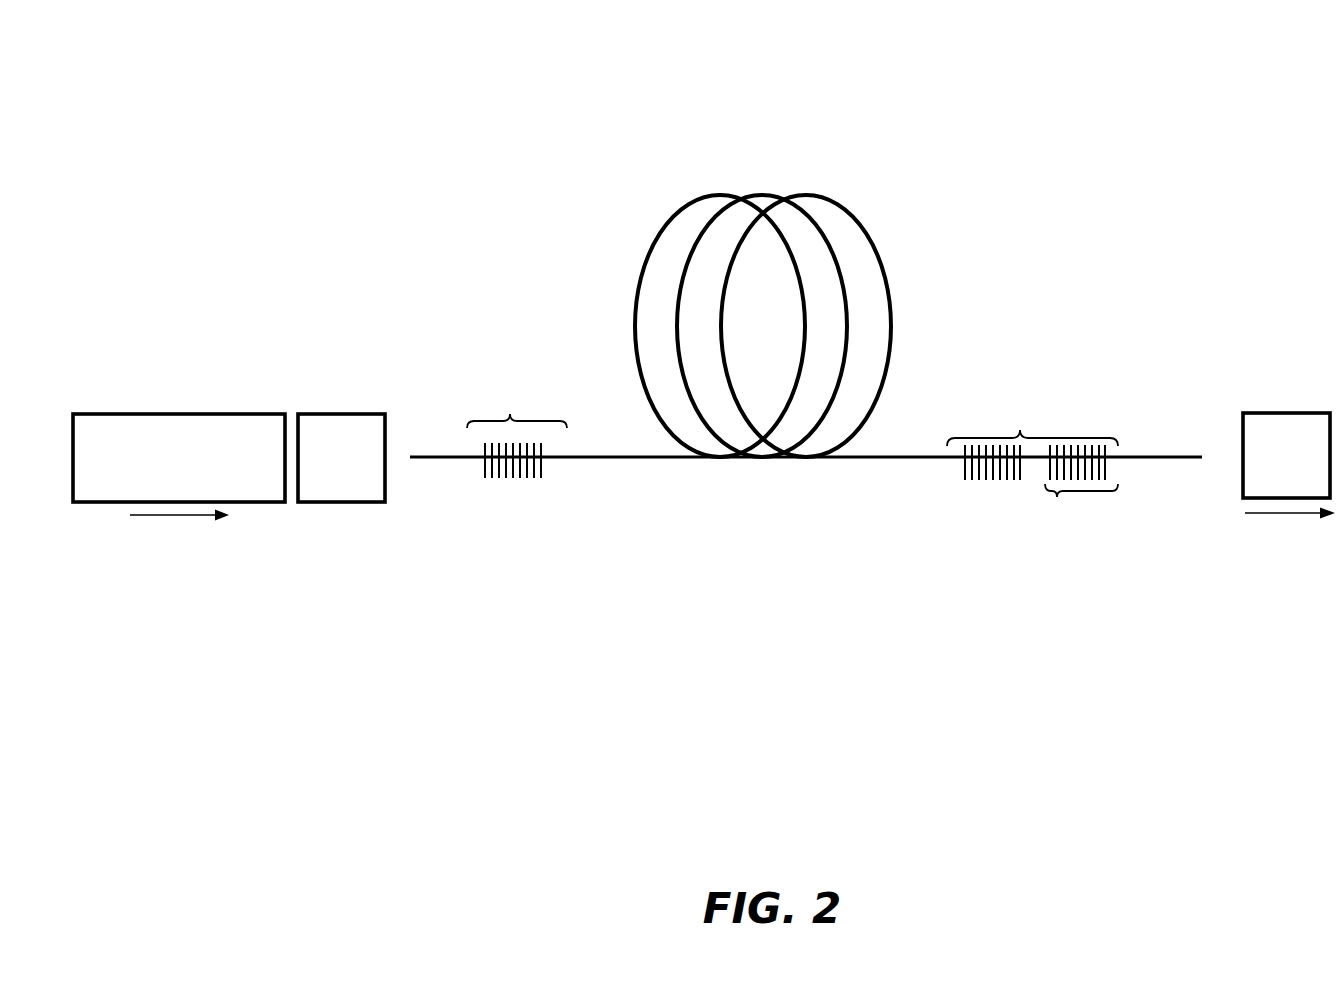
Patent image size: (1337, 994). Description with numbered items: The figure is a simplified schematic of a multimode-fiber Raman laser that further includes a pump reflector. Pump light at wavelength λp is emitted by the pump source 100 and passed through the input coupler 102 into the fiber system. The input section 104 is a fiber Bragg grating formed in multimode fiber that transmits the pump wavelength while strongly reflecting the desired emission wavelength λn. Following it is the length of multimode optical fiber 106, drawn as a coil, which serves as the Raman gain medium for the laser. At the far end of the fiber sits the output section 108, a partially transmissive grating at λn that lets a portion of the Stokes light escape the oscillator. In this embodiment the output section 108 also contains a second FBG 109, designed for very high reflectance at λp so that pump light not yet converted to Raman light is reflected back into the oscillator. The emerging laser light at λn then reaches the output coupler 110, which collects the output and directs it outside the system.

The pump source 100 is at (200, 414).
The input coupler 102 is at (340, 414).
The input section 104 is at (510, 416).
The length of multimode optical fiber 106 is at (762, 195).
The output section 108 is at (1020, 432).
The second FBG 109 is at (1057, 497).
The output coupler 110 is at (1285, 413).